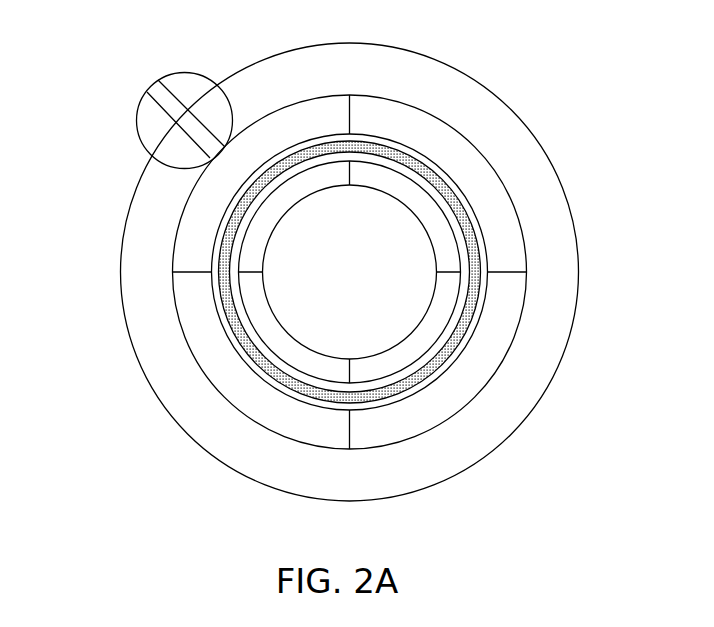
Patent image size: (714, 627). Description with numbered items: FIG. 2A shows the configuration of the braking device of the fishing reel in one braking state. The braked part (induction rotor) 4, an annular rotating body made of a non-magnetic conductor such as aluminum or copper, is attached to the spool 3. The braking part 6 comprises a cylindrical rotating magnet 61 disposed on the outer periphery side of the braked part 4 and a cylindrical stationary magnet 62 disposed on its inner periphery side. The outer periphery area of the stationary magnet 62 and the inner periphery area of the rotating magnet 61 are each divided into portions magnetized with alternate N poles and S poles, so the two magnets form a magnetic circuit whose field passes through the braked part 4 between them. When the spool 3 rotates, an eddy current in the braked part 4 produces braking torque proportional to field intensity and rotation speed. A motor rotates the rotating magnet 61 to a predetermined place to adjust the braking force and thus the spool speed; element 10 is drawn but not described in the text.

The spool 3 is at (505, 413).
The braked part (induction rotor) 4 is at (480, 307).
The braking part 6 is at (276, 272).
The rotating magnet 61 is at (195, 283).
The stationary magnet 62 is at (253, 312).
The magnetic sensor 10 is at (153, 128).